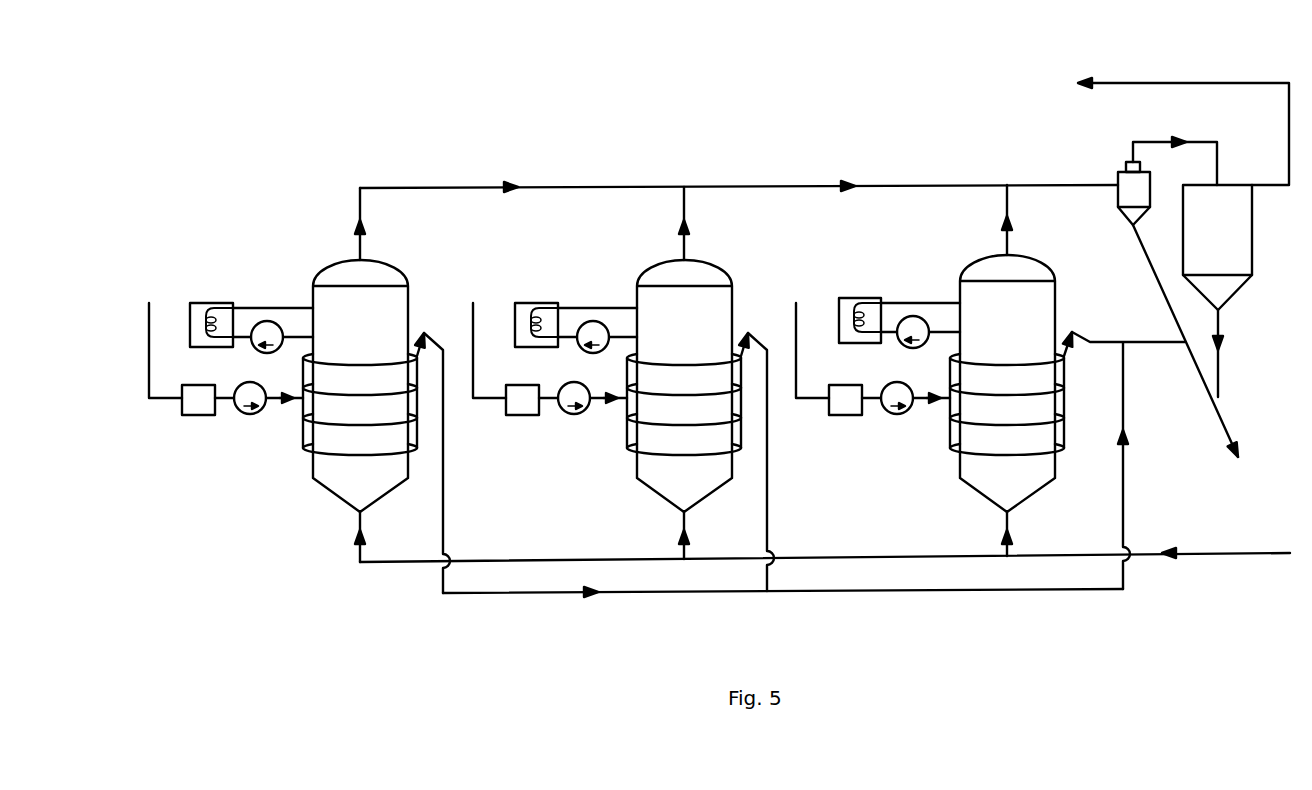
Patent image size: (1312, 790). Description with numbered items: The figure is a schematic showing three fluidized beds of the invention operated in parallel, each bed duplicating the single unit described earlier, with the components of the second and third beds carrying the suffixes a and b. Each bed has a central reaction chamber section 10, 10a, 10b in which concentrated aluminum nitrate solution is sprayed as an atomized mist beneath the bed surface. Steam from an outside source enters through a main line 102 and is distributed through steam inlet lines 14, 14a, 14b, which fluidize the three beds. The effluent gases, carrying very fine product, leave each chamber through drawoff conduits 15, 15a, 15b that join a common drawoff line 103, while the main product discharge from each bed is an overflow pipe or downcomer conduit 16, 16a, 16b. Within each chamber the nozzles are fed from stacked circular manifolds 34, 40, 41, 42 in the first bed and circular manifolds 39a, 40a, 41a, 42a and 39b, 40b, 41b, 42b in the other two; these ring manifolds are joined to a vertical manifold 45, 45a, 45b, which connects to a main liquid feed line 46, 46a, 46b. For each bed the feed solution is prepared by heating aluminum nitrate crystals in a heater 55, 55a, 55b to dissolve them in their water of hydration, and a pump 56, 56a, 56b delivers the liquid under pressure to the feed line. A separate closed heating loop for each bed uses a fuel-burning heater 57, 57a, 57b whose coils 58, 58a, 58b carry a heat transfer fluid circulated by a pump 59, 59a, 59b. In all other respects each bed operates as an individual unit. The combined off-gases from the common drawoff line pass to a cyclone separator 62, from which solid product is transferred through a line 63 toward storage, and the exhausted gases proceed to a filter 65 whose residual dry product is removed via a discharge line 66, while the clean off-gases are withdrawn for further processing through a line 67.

The central reaction chamber section 10 is at (410, 318).
The central reaction chamber section 10a is at (735, 296).
The central reaction chamber section 10b is at (1058, 311).
The steam inlet line 14 is at (382, 524).
The steam inlet line 14a is at (706, 524).
The steam inlet line 14b is at (1028, 522).
The discharge line 15 is at (362, 241).
The discharge line 15a is at (686, 241).
The discharge line 15b is at (1009, 240).
The overflow pipe 16 is at (443, 493).
The overflow pipe 16a is at (767, 497).
The overflow pipe 16b is at (1124, 485).
The upper heating coil turn 34 is at (387, 357).
The circular manifold 39a is at (711, 357).
The circular manifold 39b is at (1039, 357).
The circular manifold 40 is at (388, 392).
The circular manifold 40a is at (712, 392).
The circular manifold 40b is at (1040, 392).
The circular manifold 41 is at (388, 422).
The circular manifold 41a is at (712, 422).
The circular manifold 41b is at (1040, 422).
The circular manifold 42 is at (388, 452).
The circular manifold 42a is at (712, 452).
The circular manifold 42b is at (1040, 452).
The vertical manifold 45 is at (303, 364).
The vertical manifold 45a is at (624, 432).
The vertical manifold 45b is at (948, 432).
The main liquid feed line 46 is at (297, 400).
The main liquid feed line 46a is at (624, 400).
The main liquid feed line 46b is at (945, 400).
The heater 55 is at (196, 416).
The heater 55a is at (520, 416).
The heater 55b is at (843, 416).
The pump 56 is at (246, 414).
The pump 56a is at (570, 414).
The pump 56b is at (893, 414).
The heater 57 is at (205, 303).
The heater 57a is at (530, 303).
The heater 57b is at (853, 298).
The coils 58 is at (214, 314).
The coils 58a is at (539, 314).
The coils 58b is at (863, 309).
The pump 59 is at (268, 321).
The pump 59a is at (594, 321).
The pump 59b is at (916, 316).
The cyclone separator 62 is at (1127, 177).
The line 63 is at (1148, 257).
The filter 65 is at (1245, 235).
The discharge line 66 is at (1220, 360).
The line 67 is at (1243, 82).
The main line 102 is at (1204, 557).
The common drawoff line 103 is at (978, 185).